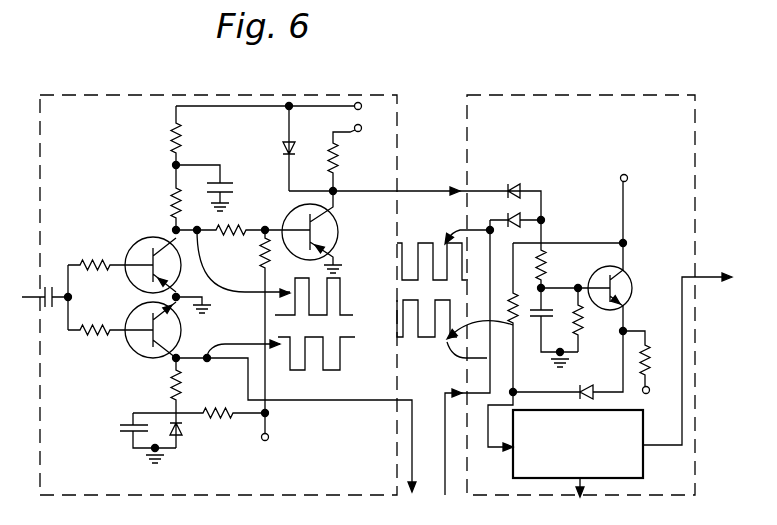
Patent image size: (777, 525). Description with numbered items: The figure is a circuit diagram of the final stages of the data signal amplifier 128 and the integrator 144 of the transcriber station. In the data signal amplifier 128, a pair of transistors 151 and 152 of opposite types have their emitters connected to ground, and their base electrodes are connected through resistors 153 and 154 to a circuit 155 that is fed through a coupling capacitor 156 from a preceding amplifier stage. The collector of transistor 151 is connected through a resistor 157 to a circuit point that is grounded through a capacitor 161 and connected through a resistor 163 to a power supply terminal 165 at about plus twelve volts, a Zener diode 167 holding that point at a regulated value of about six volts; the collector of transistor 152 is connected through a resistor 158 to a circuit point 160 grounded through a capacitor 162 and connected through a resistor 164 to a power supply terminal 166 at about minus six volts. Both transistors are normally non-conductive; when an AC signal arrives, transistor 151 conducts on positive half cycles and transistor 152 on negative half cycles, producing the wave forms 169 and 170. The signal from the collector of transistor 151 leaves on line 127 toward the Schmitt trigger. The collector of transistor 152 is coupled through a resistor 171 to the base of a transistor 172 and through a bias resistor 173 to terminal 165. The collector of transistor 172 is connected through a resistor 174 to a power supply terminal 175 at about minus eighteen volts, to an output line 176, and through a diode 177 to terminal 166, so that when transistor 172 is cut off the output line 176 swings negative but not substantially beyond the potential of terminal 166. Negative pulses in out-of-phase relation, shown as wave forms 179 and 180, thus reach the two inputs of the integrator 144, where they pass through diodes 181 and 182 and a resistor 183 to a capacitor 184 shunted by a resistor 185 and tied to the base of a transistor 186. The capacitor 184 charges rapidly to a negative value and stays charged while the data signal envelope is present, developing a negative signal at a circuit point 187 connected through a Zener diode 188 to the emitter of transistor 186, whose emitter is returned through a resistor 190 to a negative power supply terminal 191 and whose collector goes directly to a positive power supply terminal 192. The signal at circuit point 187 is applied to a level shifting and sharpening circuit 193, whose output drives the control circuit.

The line 127 is at (407, 442).
The data signal amplifier 128 is at (395, 94).
The integrator 144 is at (680, 94).
The transistor 151 is at (148, 360).
The transistor 152 is at (148, 238).
The resistor 153 is at (88, 338).
The resistor 154 is at (102, 256).
The circuit 155 is at (74, 296).
The coupling capacitor 156 is at (43, 306).
The resistor 157 is at (181, 387).
The resistor 158 is at (173, 196).
The circuit point 160 is at (173, 165).
The capacitor 161 is at (123, 437).
The capacitor 162 is at (237, 190).
The resistor 163 is at (207, 418).
The resistor 164 is at (199, 135).
The power supply terminal 165 is at (270, 434).
The power supply terminal 166 is at (352, 108).
The Zener diode 167 is at (180, 436).
The wave form 169 is at (316, 368).
The wave form 170 is at (341, 289).
The resistor 171 is at (228, 236).
The transistor 172 is at (338, 240).
The bias resistor 173 is at (290, 268).
The resistor 174 is at (338, 187).
The power supply terminal 175 is at (348, 153).
The output line 176 is at (435, 189).
The diode 177 is at (285, 147).
The wave form 179 is at (444, 340).
The wave form 180 is at (440, 223).
The diode 181 is at (521, 216).
The diode 182 is at (515, 188).
The resistor 183 is at (546, 266).
The capacitor 184 is at (540, 355).
The resistor 185 is at (582, 324).
The transistor 186 is at (629, 281).
The circuit point 187 is at (514, 402).
The Zener diode 188 is at (588, 388).
The resistor 190 is at (651, 341).
The negative power supply terminal 191 is at (652, 390).
The positive power supply terminal 192 is at (628, 180).
The level shifting and sharpening circuit 193 is at (583, 497).